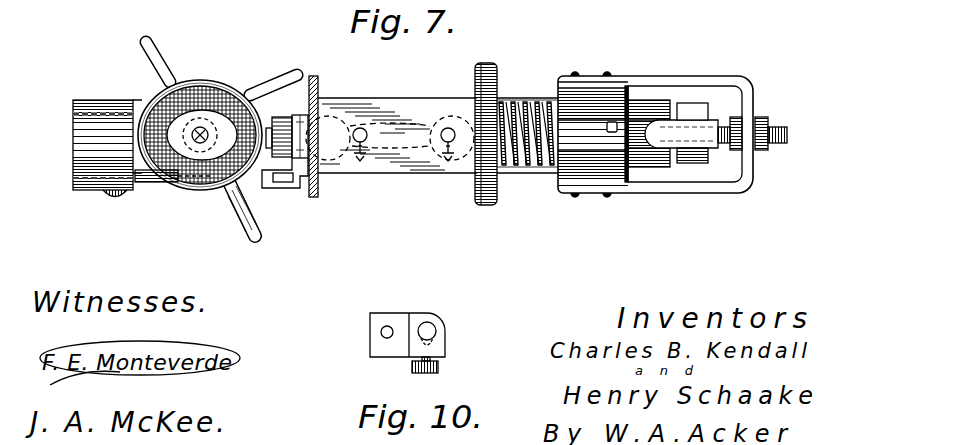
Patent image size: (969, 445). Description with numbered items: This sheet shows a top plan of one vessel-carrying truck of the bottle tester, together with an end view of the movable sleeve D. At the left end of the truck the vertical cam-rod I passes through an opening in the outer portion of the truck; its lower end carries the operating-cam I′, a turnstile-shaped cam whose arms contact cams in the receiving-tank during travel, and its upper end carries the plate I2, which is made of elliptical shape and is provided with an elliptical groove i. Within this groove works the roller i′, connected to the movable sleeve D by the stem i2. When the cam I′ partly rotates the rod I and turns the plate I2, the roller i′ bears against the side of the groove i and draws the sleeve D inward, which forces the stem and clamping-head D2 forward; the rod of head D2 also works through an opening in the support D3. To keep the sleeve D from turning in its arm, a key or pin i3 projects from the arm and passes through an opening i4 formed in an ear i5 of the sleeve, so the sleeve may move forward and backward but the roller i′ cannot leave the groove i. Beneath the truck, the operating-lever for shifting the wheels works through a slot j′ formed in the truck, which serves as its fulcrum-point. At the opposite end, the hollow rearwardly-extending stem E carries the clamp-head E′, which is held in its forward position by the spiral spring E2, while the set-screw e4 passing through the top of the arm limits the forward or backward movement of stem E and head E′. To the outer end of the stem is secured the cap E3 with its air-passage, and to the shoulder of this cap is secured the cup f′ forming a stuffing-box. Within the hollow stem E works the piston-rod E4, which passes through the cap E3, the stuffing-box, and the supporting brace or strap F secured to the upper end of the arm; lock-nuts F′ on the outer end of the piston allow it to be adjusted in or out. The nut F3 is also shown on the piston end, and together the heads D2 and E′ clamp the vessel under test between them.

In FIG. 7, the vertical cam-rod I is at (200, 128).
In FIG. 7, the operating-cam I′ is at (152, 50).
In FIG. 7, the plate I2 is at (232, 82).
In FIG. 7, the groove i is at (197, 185).
In FIG. 7, the key or pin i3 is at (165, 182).
In FIG. 7, the slot j′ is at (284, 182).
In FIG. 7, the support D3 is at (284, 120).
In FIG. 7, the head D2 is at (318, 82).
In FIG. 7, the head E′ is at (486, 66).
In FIG. 7, the rearwardly-extending rod or stem E is at (525, 110).
In FIG. 7, the spiral spring E2 is at (536, 167).
In FIG. 7, the cap E3 is at (650, 100).
In FIG. 7, the set-screw e4 is at (612, 124).
In FIG. 7, the piston-rod E4 is at (780, 144).
In FIG. 7, the supporting brace or strap F is at (690, 78).
In FIG. 7, the lock-nuts F′ is at (736, 118).
In FIG. 7, the inner nut F3 is at (738, 116).
In FIG. 7, the cup f′ is at (698, 166).
In FIG. 10, the movable sleeve D is at (441, 326).
In FIG. 10, the ear i5 is at (398, 316).
In FIG. 10, the opening i4 is at (385, 334).
In FIG. 10, the stem i2 is at (433, 359).
In FIG. 10, the roller i′ is at (425, 374).